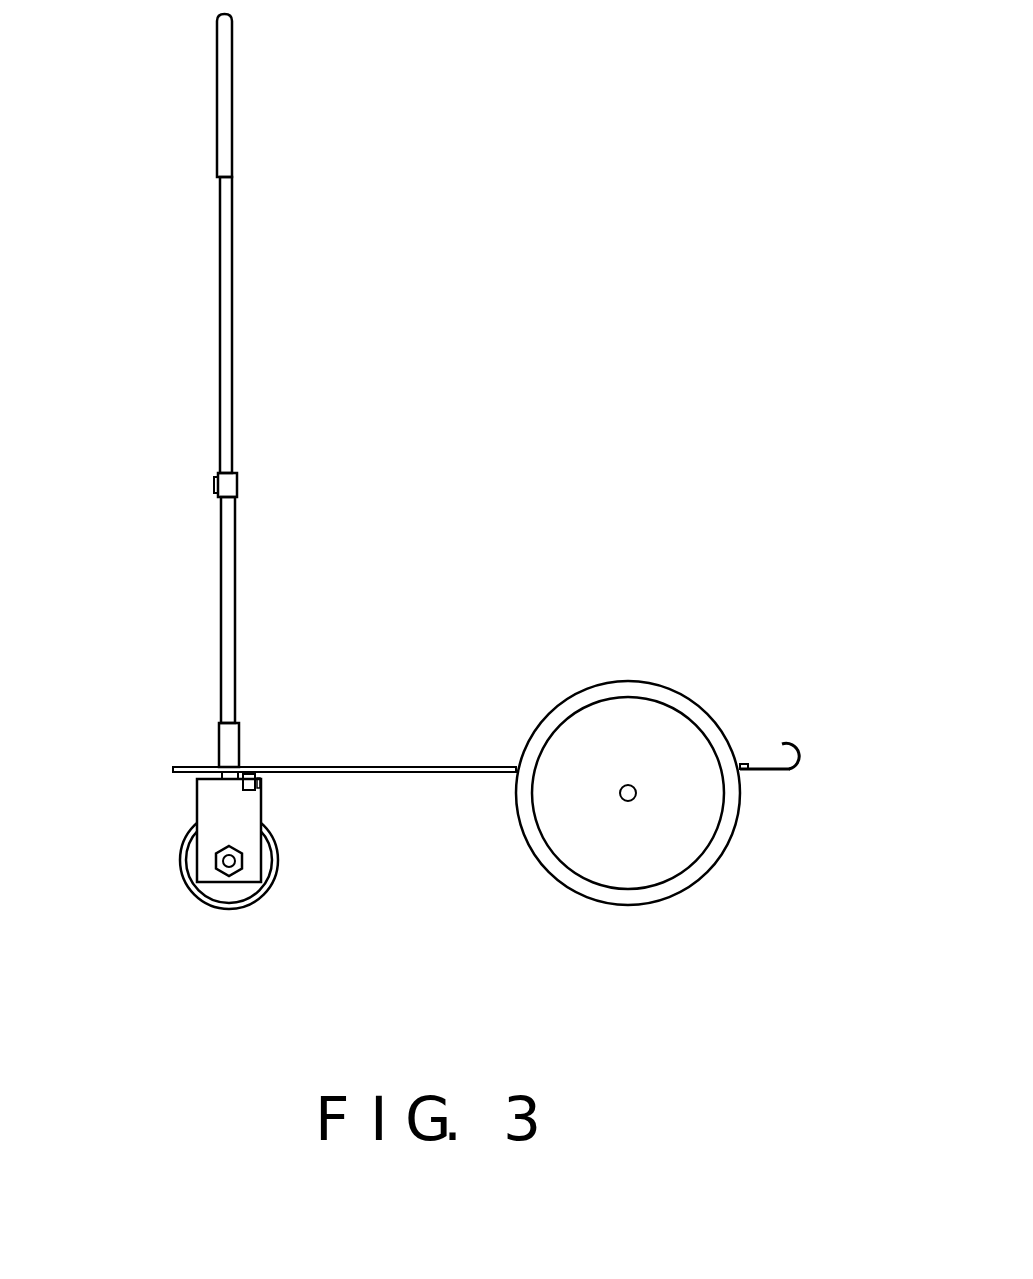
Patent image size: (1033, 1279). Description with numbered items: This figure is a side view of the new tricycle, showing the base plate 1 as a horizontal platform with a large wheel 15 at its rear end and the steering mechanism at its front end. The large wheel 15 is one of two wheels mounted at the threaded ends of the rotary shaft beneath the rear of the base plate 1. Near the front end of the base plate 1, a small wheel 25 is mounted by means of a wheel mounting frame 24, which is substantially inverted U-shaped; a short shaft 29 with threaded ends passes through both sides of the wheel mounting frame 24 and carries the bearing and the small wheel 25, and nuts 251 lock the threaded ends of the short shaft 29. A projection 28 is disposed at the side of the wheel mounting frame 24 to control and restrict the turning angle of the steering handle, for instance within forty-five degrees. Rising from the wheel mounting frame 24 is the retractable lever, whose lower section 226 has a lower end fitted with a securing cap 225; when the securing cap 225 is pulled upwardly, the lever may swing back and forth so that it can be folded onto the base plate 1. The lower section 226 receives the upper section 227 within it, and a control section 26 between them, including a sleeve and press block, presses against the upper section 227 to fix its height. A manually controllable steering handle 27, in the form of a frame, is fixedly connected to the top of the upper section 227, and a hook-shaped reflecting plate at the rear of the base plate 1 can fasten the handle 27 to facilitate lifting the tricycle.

The base plate 1 is at (427, 766).
The large wheel 15 is at (675, 857).
The wheel mounting frame 24 is at (205, 807).
The small wheel 25 is at (243, 895).
The nut 251 is at (227, 870).
The control section 26 is at (228, 488).
The steering handle 27 is at (229, 106).
The projection 28 is at (260, 790).
The short shaft 29 is at (802, 747).
The securing cap 225 is at (228, 740).
The lower section 226 is at (229, 608).
The upper section 227 is at (229, 326).